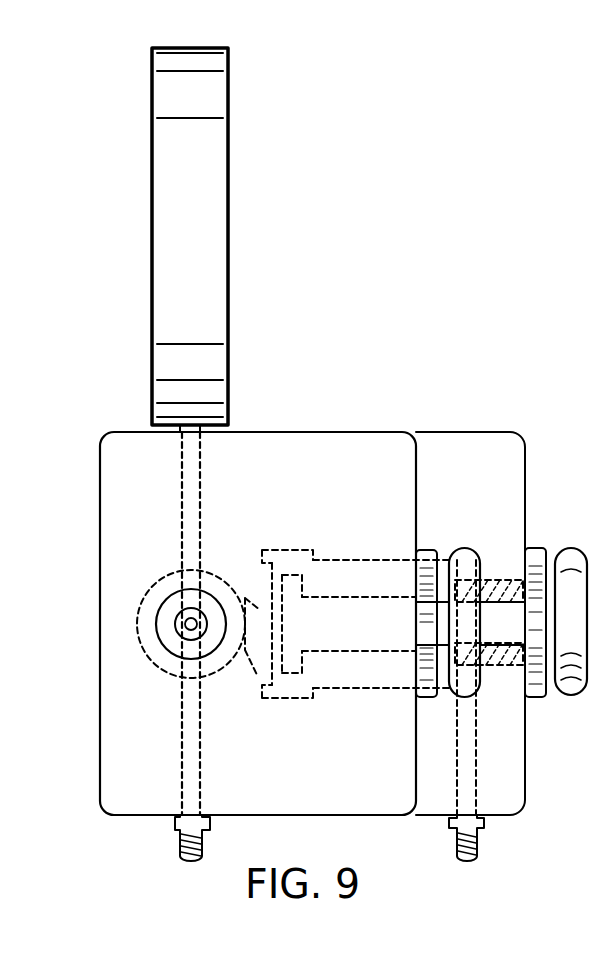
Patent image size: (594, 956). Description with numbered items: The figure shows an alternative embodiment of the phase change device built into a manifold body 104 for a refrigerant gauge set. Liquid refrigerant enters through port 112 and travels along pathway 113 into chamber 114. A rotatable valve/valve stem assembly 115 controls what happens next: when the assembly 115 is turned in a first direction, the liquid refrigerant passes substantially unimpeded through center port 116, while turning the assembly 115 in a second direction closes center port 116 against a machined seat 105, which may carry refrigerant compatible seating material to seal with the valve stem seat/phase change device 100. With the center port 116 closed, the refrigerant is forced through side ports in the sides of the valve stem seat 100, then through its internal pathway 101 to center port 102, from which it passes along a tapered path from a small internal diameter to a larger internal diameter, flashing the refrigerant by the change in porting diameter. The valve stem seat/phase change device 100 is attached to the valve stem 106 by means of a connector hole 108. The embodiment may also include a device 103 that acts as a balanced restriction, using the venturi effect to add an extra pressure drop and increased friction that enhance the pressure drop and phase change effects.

The valve stem seat/phase change device 100 is at (293, 590).
The internal pathway 101 is at (272, 606).
The center port 102 is at (268, 608).
The device (balanced restriction) 103 is at (248, 597).
The housing 104 is at (82, 531).
The machined seat 105 is at (256, 677).
The valve stem 106 is at (387, 634).
The connector hole 108 is at (329, 621).
The port 112 is at (454, 840).
The pathway 113 is at (465, 753).
The chamber 114 is at (300, 715).
The valve/valve stem assembly 115 is at (546, 602).
The center port 116 is at (163, 625).